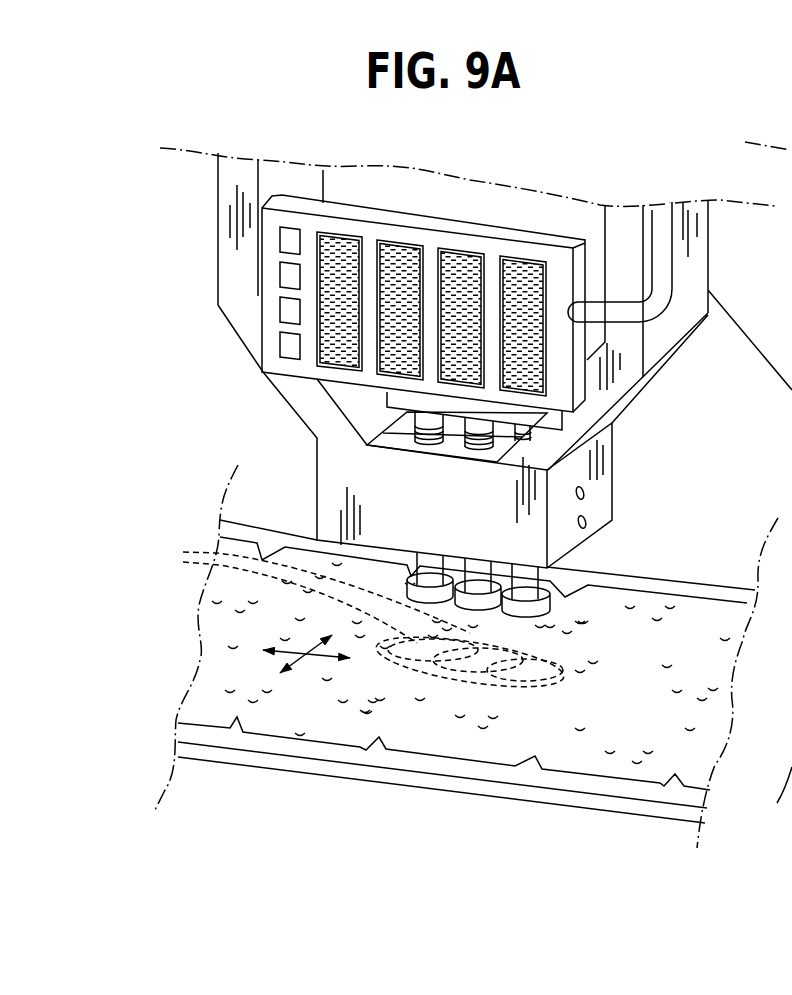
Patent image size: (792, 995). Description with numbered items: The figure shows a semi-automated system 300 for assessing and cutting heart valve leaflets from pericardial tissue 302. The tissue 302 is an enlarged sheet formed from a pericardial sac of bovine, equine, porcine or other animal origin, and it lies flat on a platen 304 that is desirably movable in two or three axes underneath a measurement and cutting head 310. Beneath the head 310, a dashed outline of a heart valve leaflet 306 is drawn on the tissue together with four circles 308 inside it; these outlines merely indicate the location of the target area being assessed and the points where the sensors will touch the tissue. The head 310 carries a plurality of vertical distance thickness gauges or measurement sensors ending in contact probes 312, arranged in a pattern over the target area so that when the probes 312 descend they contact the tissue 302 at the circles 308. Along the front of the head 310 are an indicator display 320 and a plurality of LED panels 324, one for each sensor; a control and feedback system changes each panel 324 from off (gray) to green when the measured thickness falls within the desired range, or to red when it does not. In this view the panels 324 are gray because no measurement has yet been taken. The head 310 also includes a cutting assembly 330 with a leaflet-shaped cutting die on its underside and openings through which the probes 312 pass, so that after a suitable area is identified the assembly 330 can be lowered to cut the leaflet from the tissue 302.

The semi-automated system 300 is at (256, 446).
The pericardial tissue 302 is at (638, 728).
The platen 304 is at (267, 745).
The heart valve leaflet outline 306 is at (541, 686).
The circles 308 is at (346, 611).
The measurement and cutting head 310 is at (650, 366).
The contact probes 312 is at (553, 605).
The indicator display 320 is at (341, 205).
The LED panels 324 is at (513, 278).
The cutting assembly 330 is at (603, 502).